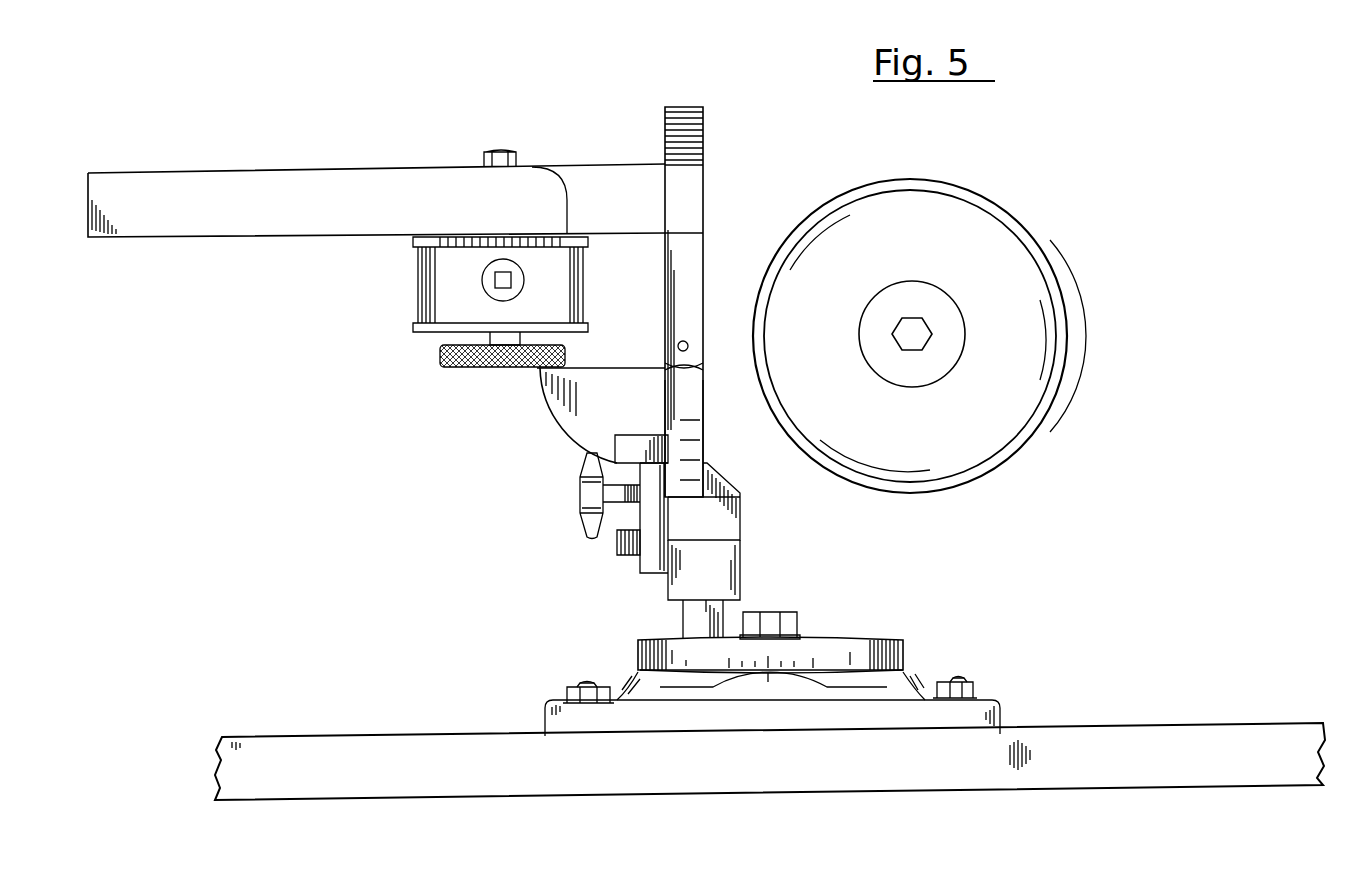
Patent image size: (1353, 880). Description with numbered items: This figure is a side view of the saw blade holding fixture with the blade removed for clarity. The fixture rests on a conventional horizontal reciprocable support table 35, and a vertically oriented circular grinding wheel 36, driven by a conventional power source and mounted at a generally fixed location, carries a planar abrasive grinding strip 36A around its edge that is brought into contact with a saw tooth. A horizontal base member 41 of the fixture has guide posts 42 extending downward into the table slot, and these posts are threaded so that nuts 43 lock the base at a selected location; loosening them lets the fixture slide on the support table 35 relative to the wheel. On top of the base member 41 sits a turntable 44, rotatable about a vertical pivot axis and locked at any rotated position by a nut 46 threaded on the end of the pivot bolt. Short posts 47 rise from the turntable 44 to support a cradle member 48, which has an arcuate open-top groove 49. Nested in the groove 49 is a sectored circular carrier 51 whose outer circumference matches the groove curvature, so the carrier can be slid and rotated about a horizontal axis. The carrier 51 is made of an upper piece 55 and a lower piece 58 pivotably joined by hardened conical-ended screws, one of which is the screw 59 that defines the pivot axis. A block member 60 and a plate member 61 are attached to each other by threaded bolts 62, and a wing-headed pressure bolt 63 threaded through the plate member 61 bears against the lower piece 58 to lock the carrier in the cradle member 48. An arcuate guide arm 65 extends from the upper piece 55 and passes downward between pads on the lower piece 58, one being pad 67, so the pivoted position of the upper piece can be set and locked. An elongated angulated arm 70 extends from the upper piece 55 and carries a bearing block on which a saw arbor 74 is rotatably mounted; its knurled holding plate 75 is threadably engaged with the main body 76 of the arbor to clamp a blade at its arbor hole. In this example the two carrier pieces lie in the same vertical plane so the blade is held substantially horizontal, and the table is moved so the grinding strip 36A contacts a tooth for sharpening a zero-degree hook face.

The support table 35 is at (1153, 723).
The grinding wheel 36 is at (1020, 297).
The grinding strip 36A is at (1068, 388).
The base member 41 is at (1000, 712).
The guide posts 42 is at (583, 683).
The nuts 43 is at (565, 697).
The turntable 44 is at (900, 645).
The nut 46 is at (797, 622).
The posts 47 is at (683, 617).
The cradle member 48 is at (740, 578).
The groove 49 is at (688, 500).
The carrier 51 is at (707, 143).
The upper piece 55 is at (705, 245).
The lower piece 58 is at (705, 422).
The screw 59 is at (688, 340).
The block member 60 is at (735, 478).
The plate member 61 is at (660, 580).
The threaded bolts 62 is at (617, 553).
The pressure bolt 63 is at (613, 503).
The guide arm 65 is at (540, 405).
The pad 67 is at (615, 443).
The arm 70 is at (215, 227).
The saw arbor 74 is at (402, 332).
The knurled holding plate 75 is at (438, 362).
The main body 76 is at (413, 292).